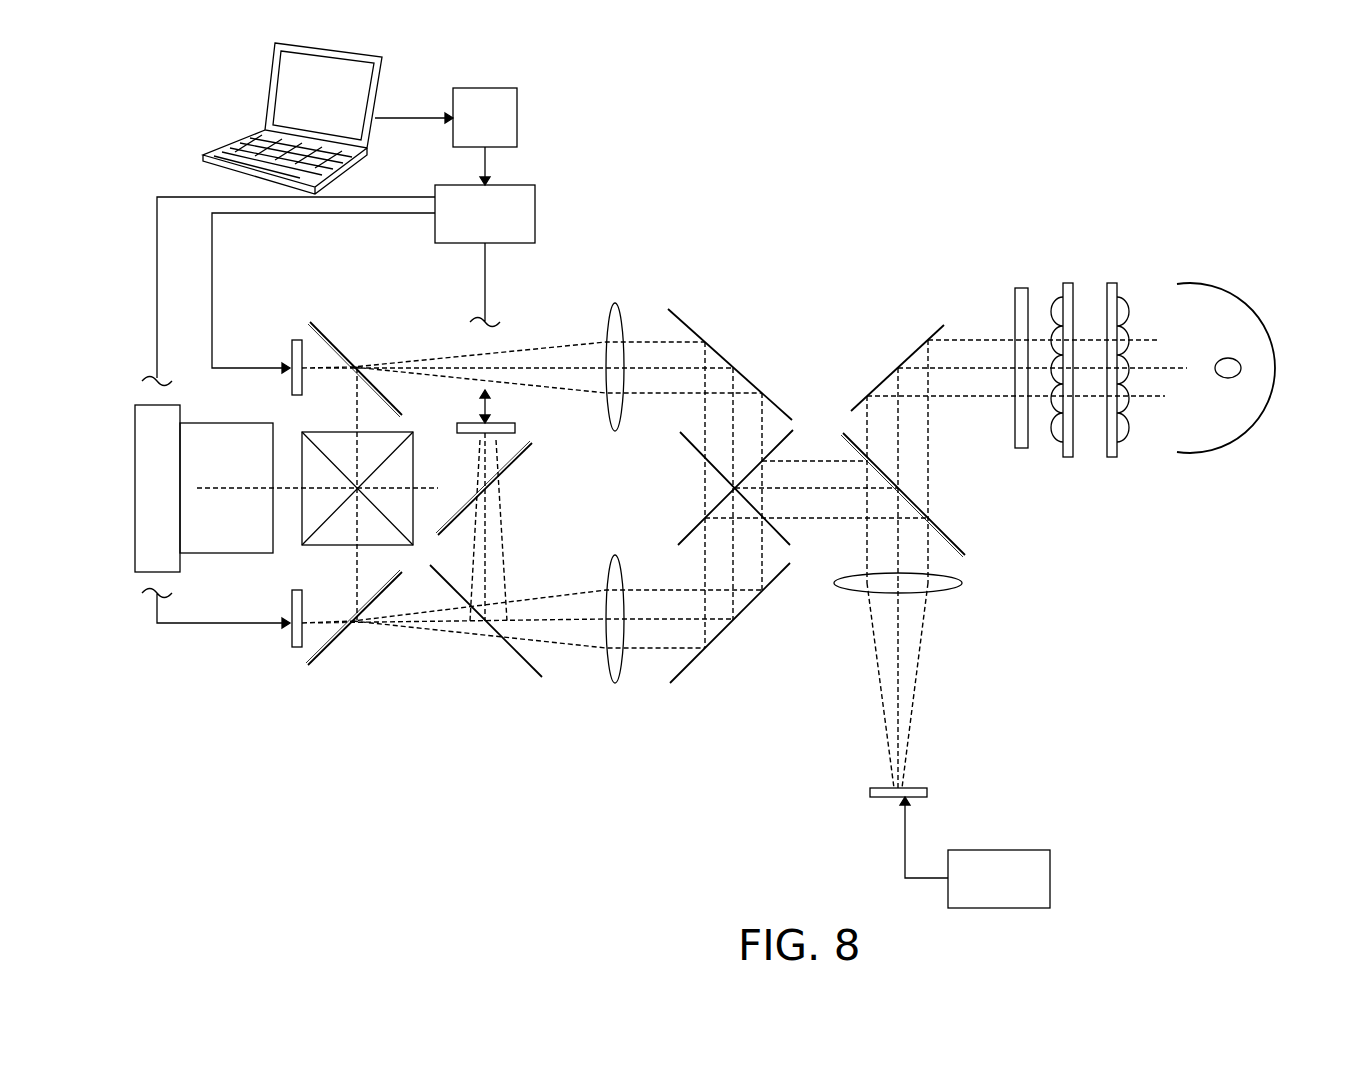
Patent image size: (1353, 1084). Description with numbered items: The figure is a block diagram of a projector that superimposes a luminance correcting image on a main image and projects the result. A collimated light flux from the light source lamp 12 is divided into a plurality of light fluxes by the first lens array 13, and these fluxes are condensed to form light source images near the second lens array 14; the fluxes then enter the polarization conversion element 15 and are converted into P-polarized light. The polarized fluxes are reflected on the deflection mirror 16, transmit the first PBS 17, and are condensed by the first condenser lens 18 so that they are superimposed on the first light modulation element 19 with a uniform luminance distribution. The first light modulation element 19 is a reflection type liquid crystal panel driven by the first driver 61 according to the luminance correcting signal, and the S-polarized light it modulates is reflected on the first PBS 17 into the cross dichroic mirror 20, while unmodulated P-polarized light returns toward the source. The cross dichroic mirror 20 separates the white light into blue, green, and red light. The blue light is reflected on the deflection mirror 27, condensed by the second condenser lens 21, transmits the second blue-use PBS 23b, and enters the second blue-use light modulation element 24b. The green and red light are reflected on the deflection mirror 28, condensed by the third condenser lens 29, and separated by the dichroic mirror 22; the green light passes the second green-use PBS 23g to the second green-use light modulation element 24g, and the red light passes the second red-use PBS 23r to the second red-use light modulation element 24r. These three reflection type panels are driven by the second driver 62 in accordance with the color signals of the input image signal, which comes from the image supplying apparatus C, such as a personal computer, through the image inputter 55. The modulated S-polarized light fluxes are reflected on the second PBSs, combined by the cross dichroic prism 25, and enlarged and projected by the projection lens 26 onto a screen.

The image supplying apparatus C is at (268, 100).
The image inputter 55 is at (517, 112).
The second driver 62 is at (535, 228).
The projection lens 26 is at (227, 556).
The cross dichroic prism 25 is at (297, 432).
The second blue-use light modulation element 24b is at (283, 350).
The second blue-use PBS 23b is at (342, 343).
The second red-use light modulation element 24r is at (287, 642).
The second red-use PBS 23r is at (333, 648).
The second green-use light modulation element 24g is at (512, 421).
The second green-use PBS 23g is at (500, 483).
The dichroic mirror 22 is at (513, 653).
The second condenser lens 21 is at (615, 303).
The third condenser lens 29 is at (615, 683).
The deflection mirror 27 is at (677, 310).
The deflection mirror 28 is at (685, 670).
The cross dichroic mirror 20 is at (795, 430).
The deflection mirror 16 is at (903, 357).
The first PBS 17 is at (965, 560).
The first condenser lens 18 is at (848, 593).
The first light modulation element 19 is at (930, 790).
The first driver 61 is at (1050, 878).
The polarization conversion element 15 is at (1018, 450).
The second lens array 14 is at (1065, 460).
The first lens array 13 is at (1112, 460).
The light source lamp 12 is at (1190, 455).